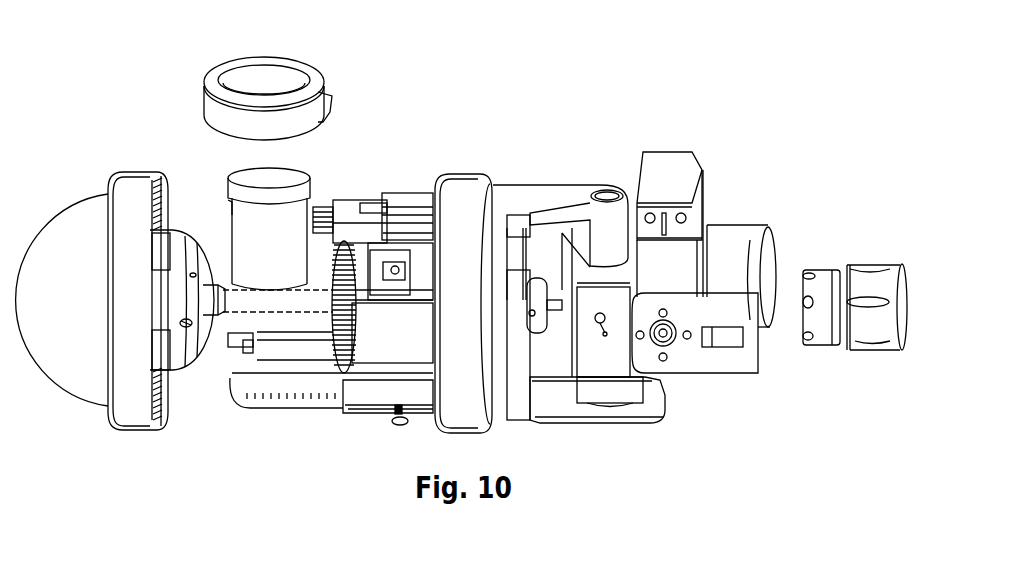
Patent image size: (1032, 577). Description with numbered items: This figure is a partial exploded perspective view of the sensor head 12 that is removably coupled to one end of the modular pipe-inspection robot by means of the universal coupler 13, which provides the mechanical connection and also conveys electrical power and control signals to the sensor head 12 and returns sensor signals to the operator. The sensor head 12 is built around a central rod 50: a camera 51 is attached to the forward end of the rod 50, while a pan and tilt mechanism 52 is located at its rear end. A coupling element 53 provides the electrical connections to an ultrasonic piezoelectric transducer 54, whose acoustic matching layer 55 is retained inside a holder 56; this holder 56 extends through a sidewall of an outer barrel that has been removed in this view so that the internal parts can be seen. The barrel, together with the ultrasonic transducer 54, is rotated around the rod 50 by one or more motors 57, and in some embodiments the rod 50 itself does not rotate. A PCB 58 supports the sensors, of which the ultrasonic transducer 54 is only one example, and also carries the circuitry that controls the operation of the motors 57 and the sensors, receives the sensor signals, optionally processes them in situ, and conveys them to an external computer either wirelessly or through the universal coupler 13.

The sensor head 12 is at (612, 463).
The universal coupler 13 is at (852, 343).
The central rod 50 is at (258, 303).
The camera 51 is at (81, 307).
The pan and tilt mechanism 52 is at (521, 180).
The coupling element 53 is at (349, 204).
The ultrasonic piezoelectric transducer 54 is at (230, 212).
The acoustic matching layer 55 is at (277, 178).
The holder 56 is at (313, 77).
The motors 57 is at (408, 346).
The PCB 58 is at (267, 406).